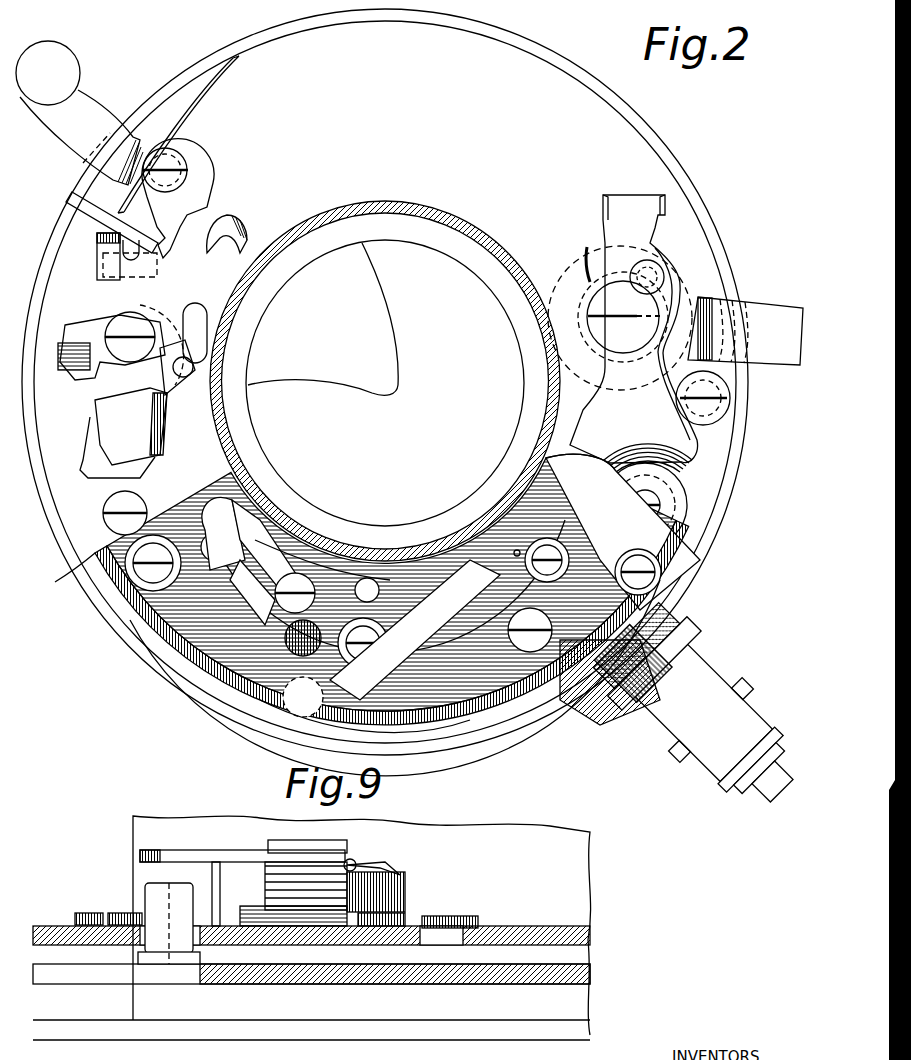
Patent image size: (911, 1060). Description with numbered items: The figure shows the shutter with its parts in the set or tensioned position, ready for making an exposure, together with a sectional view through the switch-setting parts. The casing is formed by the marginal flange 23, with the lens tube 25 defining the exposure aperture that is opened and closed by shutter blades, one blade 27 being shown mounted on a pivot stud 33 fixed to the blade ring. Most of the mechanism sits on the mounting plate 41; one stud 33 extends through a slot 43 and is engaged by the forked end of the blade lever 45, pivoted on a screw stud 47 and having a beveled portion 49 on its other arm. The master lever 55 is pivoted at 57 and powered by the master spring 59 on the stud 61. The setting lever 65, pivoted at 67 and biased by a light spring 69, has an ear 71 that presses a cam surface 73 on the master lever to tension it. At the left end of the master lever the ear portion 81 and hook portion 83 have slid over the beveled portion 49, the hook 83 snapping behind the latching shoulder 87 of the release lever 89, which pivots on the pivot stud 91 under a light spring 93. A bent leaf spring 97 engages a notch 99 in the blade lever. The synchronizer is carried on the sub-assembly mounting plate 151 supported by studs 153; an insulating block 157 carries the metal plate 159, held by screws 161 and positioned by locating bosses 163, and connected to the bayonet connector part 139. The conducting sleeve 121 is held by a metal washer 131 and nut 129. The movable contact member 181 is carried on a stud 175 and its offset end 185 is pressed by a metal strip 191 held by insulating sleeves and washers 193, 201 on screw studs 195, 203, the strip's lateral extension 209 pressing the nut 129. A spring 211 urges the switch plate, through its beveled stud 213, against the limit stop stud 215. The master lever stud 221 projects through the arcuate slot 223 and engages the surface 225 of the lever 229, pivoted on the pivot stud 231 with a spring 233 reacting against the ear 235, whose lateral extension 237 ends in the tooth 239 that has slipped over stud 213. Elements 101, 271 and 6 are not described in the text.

In FIG. 2, the marginal flange 23 is at (665, 160).
In FIG. 9, the marginal flange 23 is at (585, 858).
In FIG. 2, the lens tube 25 is at (540, 298).
In FIG. 2, the shutter blade 27 is at (400, 375).
In FIG. 2, the pivot stud 33 is at (250, 356).
In FIG. 2, the mounting plate 41 is at (65, 515).
In FIG. 9, the mounting plate 41 is at (592, 1030).
In FIG. 2, the slot 43 is at (198, 310).
In FIG. 2, the blade lever 45 is at (152, 312).
In FIG. 2, the screw stud 47 is at (115, 325).
In FIG. 2, the beveled portion 49 is at (74, 362).
In FIG. 2, the master lever 55 is at (688, 452).
In FIG. 9, the master lever 55 is at (590, 975).
In FIG. 2, the pivot 57 is at (660, 500).
In FIG. 2, the master spring 59 is at (730, 368).
In FIG. 2, the stud 61 is at (735, 400).
In FIG. 2, the setting lever 65 is at (760, 300).
In FIG. 2, the pivot 67 is at (600, 300).
In FIG. 2, the light spring 69 is at (545, 382).
In FIG. 2, the ear 71 is at (598, 258).
In FIG. 2, the cam surface 73 is at (600, 228).
In FIG. 2, the ear portion 81 is at (97, 282).
In FIG. 2, the hook portion 83 is at (106, 224).
In FIG. 2, the latching shoulder 87 is at (132, 242).
In FIG. 2, the release lever 89 is at (85, 120).
In FIG. 2, the pivot stud 91 is at (185, 158).
In FIG. 2, the light spring 93 is at (227, 70).
In FIG. 2, the bent leaf spring 97 is at (90, 455).
In FIG. 2, the notch 99 is at (112, 390).
In FIG. 2, the hook 101 is at (244, 232).
In FIG. 2, the conducting sleeve 121 is at (722, 690).
In FIG. 2, the nut 129 is at (600, 715).
In FIG. 2, the metal washer 131 is at (705, 615).
In FIG. 2, the bayonet connector part 139 is at (775, 775).
In FIG. 2, the sub-assembly mounting plate 151 is at (178, 492).
In FIG. 9, the sub-assembly mounting plate 151 is at (570, 930).
In FIG. 2, the studs 153 is at (510, 505).
In FIG. 2, the insulating block 157 is at (470, 545).
In FIG. 2, the metal plate 159 is at (500, 520).
In FIG. 2, the screws 161 is at (535, 612).
In FIG. 2, the locating bosses 163 is at (525, 562).
In FIG. 2, the stud 175 is at (420, 650).
In FIG. 2, the movable electric contact member 181 is at (380, 630).
In FIG. 2, the offset end 185 is at (300, 715).
In FIG. 2, the metal strip 191 is at (450, 720).
In FIG. 2, the insulating sleeves and washers 193 is at (125, 565).
In FIG. 2, the screw stud 195 is at (140, 590).
In FIG. 2, the insulating sleeves and washers 201 is at (665, 556).
In FIG. 2, the screw stud 203 is at (665, 575).
In FIG. 2, the lateral extension 209 is at (665, 680).
In FIG. 2, the spring 211 is at (385, 735).
In FIG. 2, the stud 213 is at (321, 626).
In FIG. 9, the stud 213 is at (405, 895).
In FIG. 2, the limit stop stud 215 is at (390, 565).
In FIG. 9, the limit stop stud 215 is at (478, 918).
In FIG. 2, the stud 221 is at (205, 520).
In FIG. 9, the stud 221 is at (145, 895).
In FIG. 2, the arcuate slot 223 is at (248, 599).
In FIG. 2, the surface 225 is at (215, 548).
In FIG. 9, the surface 225 is at (80, 912).
In FIG. 2, the lever 229 is at (285, 545).
In FIG. 9, the lever 229 is at (268, 945).
In FIG. 2, the pivot stud 231 is at (350, 565).
In FIG. 9, the pivot stud 231 is at (310, 840).
In FIG. 2, the spring 233 is at (300, 570).
In FIG. 9, the spring 233 is at (356, 862).
In FIG. 2, the ear 235 is at (260, 530).
In FIG. 9, the ear 235 is at (165, 870).
In FIG. 2, the lateral extension 237 is at (250, 580).
In FIG. 9, the lateral extension 237 is at (210, 855).
In FIG. 2, the tooth 239 is at (285, 705).
In FIG. 9, the tooth 239 is at (385, 868).
In FIG. 9, the nut 271 is at (410, 917).
In FIG. 2, the screw 6 is at (112, 530).